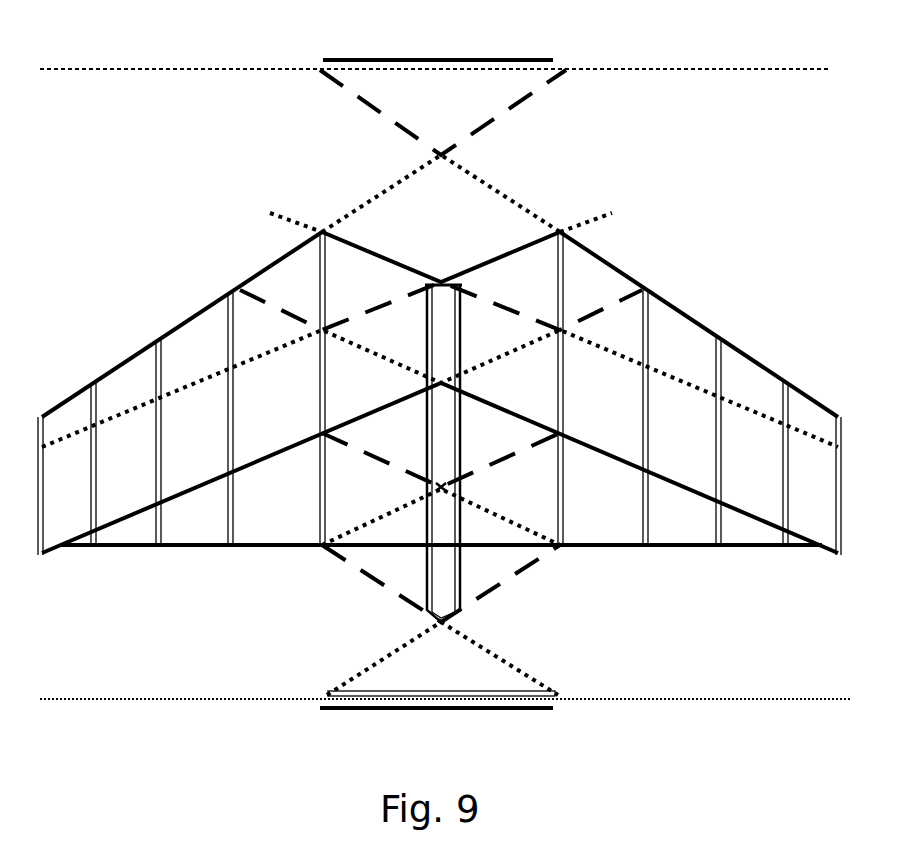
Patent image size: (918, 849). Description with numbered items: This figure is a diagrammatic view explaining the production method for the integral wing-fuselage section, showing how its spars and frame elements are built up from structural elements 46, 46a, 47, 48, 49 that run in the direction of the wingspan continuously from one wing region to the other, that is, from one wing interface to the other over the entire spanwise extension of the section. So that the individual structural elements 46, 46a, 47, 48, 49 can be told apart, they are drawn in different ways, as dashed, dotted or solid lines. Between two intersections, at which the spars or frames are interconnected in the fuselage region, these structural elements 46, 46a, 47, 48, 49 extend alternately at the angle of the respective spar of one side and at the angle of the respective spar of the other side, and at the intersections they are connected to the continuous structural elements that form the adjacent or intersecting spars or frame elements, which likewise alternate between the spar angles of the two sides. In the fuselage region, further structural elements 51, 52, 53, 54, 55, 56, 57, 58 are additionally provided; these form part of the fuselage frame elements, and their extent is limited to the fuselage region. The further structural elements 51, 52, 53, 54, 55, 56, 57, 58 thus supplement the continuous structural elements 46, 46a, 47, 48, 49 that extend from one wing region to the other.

The structural element 46 is at (210, 302).
The structural element 46a is at (258, 290).
The structural element 47 is at (203, 375).
The structural element 48 is at (202, 482).
The structural element 49 is at (183, 548).
The further structural element 51 is at (545, 58).
The further structural element 52 is at (358, 96).
The further structural element 53 is at (375, 194).
The further structural element 54 is at (365, 462).
The further structural element 55 is at (513, 522).
The further structural element 56 is at (375, 577).
The further structural element 57 is at (363, 673).
The further structural element 58 is at (343, 710).